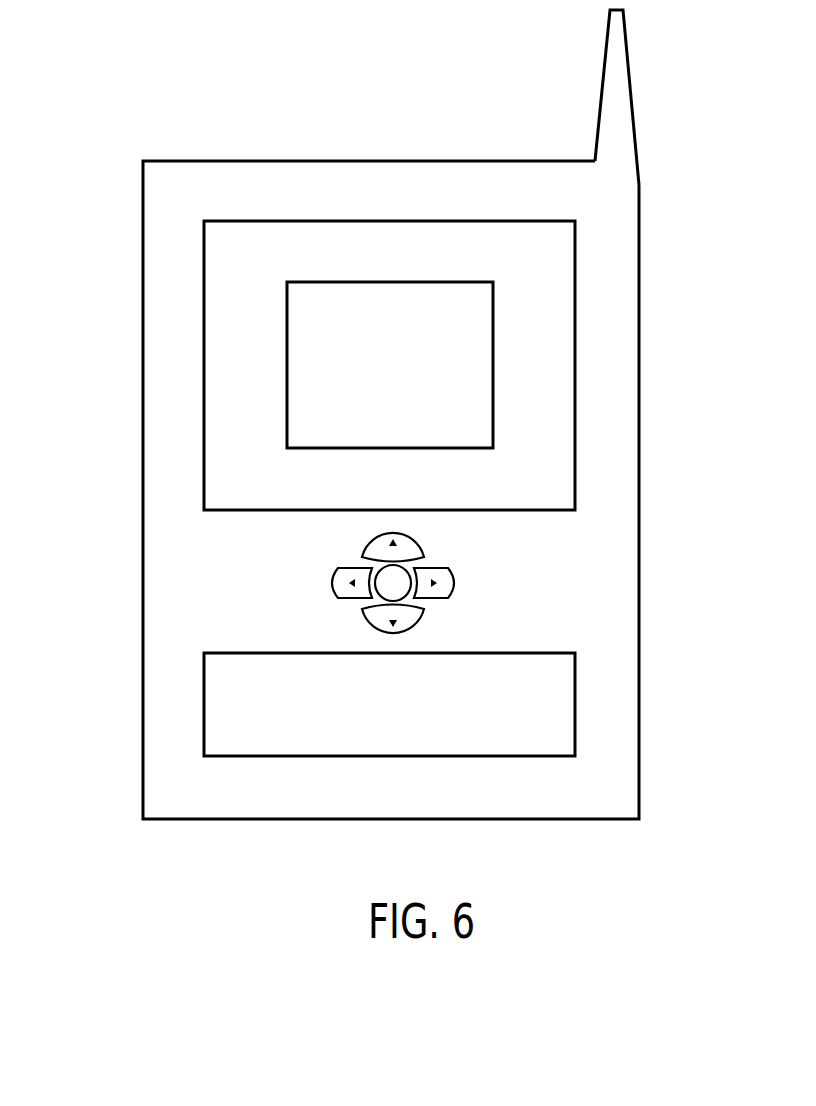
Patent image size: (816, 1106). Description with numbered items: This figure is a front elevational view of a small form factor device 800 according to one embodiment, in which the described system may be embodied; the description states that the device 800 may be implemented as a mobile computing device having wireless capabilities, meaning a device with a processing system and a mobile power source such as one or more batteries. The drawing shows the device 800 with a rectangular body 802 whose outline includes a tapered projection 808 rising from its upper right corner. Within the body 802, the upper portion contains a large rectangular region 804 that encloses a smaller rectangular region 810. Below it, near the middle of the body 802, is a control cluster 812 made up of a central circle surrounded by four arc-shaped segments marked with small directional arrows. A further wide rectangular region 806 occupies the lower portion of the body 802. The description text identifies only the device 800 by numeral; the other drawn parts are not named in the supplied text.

The small form factor device 800 is at (142, 102).
The housing 802 is at (142, 575).
The display screen 804 is at (576, 273).
The keypad 806 is at (576, 703).
The antenna 808 is at (602, 85).
The display window 810 is at (391, 282).
The navigation control 812 is at (500, 586).